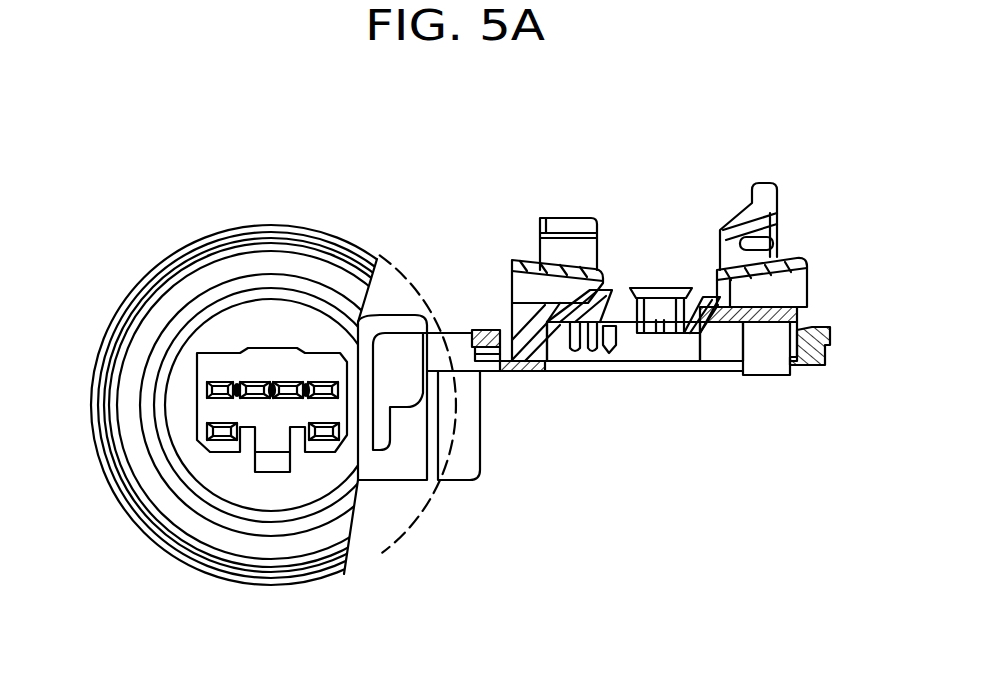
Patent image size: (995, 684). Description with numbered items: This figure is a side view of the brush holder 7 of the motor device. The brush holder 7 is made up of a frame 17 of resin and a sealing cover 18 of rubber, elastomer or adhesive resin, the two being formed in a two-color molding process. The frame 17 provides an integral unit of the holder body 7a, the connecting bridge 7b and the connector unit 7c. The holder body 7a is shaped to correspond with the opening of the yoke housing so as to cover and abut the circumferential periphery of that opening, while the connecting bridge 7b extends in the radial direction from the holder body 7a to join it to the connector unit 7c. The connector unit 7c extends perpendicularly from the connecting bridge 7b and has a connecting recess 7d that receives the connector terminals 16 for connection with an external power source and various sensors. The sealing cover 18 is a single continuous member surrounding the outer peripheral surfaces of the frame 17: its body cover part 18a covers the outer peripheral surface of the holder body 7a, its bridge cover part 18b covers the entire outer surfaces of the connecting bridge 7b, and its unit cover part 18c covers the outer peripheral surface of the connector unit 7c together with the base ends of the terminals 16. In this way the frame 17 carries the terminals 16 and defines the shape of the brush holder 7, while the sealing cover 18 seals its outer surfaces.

The brush holder 7 is at (799, 150).
The holder body 7a is at (513, 259).
The connecting bridge 7b is at (457, 340).
The connector unit 7c is at (221, 234).
The connecting recess 7d is at (283, 352).
The terminals 16 is at (205, 431).
The frame 17 is at (800, 278).
The sealing cover 18 is at (803, 370).
The body cover part 18a is at (831, 338).
The bridge cover part 18b is at (494, 331).
The unit cover part 18c is at (161, 309).